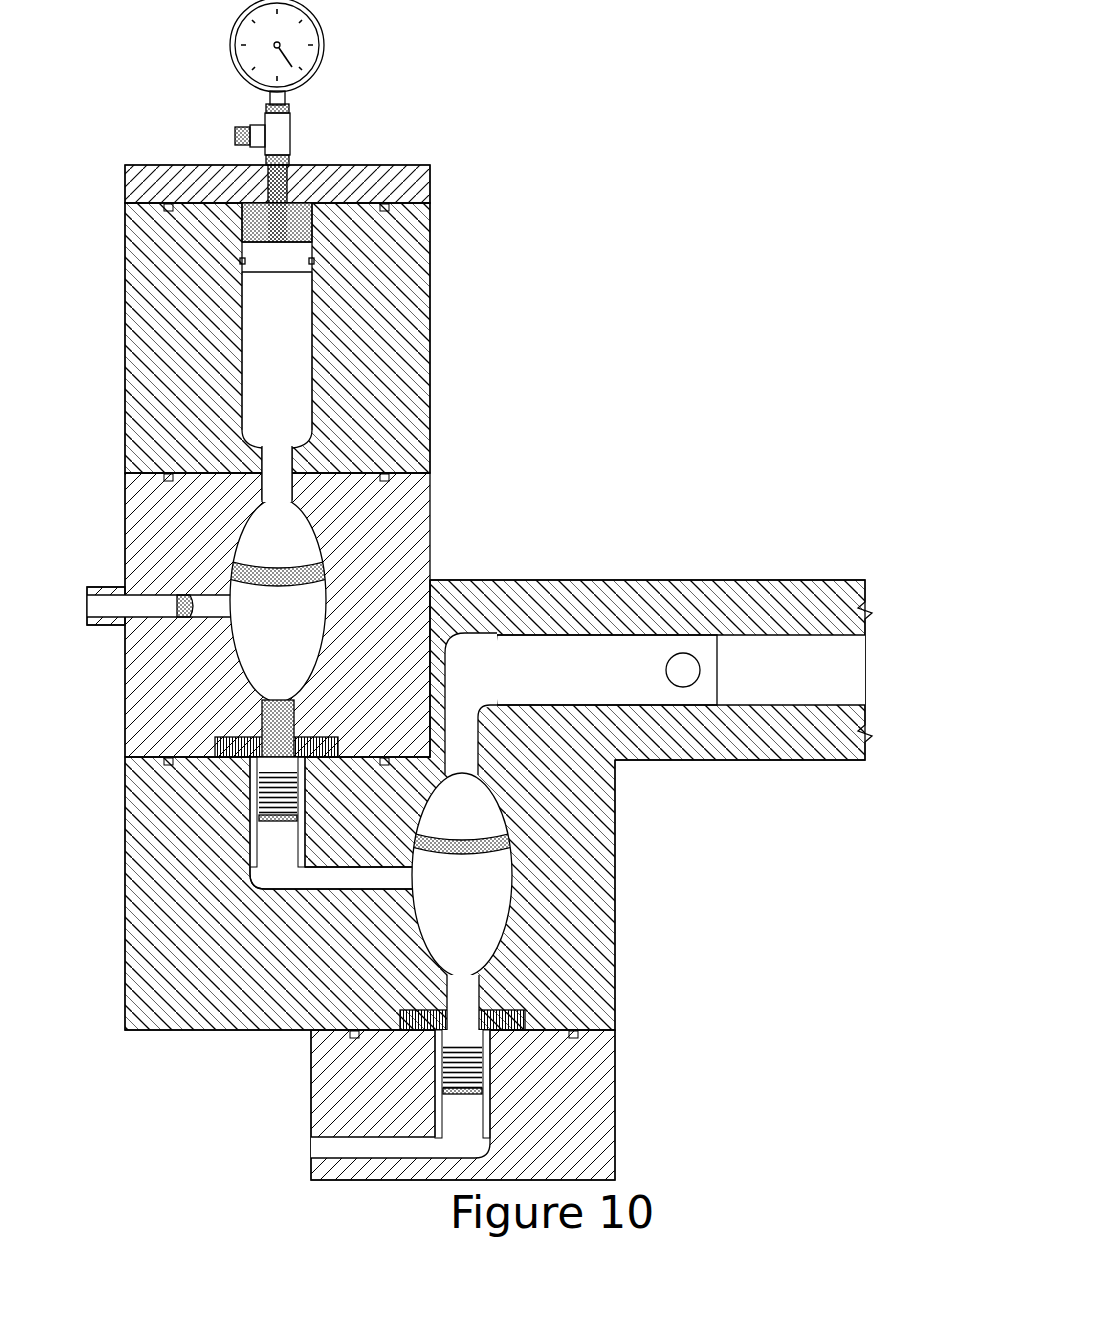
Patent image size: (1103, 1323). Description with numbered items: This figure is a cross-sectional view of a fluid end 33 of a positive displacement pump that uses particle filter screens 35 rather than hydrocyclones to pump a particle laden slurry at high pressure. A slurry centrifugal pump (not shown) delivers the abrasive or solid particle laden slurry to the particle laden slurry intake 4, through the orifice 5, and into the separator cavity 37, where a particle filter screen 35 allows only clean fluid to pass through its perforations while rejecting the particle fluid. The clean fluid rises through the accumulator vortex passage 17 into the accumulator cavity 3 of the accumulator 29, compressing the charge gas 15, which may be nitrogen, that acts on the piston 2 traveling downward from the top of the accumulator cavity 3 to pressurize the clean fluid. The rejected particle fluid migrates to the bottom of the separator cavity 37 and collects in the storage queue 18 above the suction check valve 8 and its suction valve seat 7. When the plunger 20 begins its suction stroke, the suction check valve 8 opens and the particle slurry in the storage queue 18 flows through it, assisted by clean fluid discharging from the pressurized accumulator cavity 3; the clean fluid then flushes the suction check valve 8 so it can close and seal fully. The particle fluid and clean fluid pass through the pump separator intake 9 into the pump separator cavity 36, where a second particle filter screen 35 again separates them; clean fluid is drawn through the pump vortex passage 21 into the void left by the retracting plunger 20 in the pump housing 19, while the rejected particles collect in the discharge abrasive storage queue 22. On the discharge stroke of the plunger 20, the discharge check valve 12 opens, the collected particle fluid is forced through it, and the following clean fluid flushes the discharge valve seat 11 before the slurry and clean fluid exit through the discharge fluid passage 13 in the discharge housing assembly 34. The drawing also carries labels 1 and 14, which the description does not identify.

The first valve body 1 is at (178, 230).
The piston 2 is at (277, 256).
The accumulator cavity 3 is at (282, 293).
The particle laden slurry intake 4 is at (57, 600).
The orifice 5 is at (328, 45).
The suction valve seat 7 is at (216, 748).
The suction check valve 8 is at (266, 770).
The pump separator intake 9 is at (408, 876).
The discharge valve seat 11 is at (395, 1028).
The discharge check valve 12 is at (463, 1040).
The discharge fluid passage 13 is at (307, 1143).
The top cover plate 14 is at (433, 185).
The gas 15 is at (292, 222).
The accumulator vortex passage 17 is at (277, 487).
The intake abrasive storage queue 18 is at (262, 713).
The pump housing 19 is at (530, 597).
The plunger 20 is at (596, 660).
The pump vortex passage 21 is at (468, 766).
The discharge abrasive storage queue 22 is at (483, 987).
The accumulator 29 is at (320, 350).
The fluid end 33 is at (124, 561).
The discharge housing assembly 34 is at (618, 1050).
The particle filter screen 35 is at (296, 570).
The pump separator cavity 36 is at (526, 855).
The separator cavity 37 is at (322, 525).